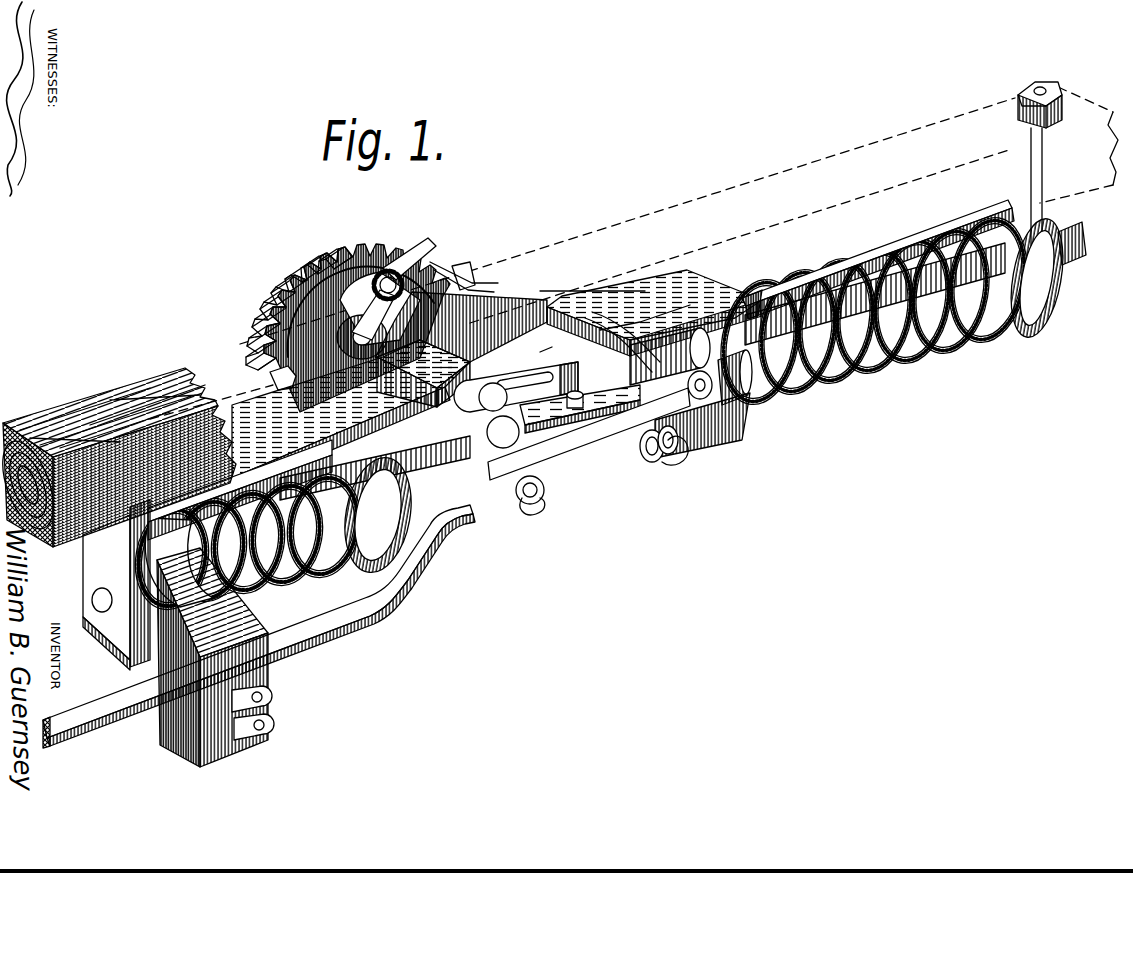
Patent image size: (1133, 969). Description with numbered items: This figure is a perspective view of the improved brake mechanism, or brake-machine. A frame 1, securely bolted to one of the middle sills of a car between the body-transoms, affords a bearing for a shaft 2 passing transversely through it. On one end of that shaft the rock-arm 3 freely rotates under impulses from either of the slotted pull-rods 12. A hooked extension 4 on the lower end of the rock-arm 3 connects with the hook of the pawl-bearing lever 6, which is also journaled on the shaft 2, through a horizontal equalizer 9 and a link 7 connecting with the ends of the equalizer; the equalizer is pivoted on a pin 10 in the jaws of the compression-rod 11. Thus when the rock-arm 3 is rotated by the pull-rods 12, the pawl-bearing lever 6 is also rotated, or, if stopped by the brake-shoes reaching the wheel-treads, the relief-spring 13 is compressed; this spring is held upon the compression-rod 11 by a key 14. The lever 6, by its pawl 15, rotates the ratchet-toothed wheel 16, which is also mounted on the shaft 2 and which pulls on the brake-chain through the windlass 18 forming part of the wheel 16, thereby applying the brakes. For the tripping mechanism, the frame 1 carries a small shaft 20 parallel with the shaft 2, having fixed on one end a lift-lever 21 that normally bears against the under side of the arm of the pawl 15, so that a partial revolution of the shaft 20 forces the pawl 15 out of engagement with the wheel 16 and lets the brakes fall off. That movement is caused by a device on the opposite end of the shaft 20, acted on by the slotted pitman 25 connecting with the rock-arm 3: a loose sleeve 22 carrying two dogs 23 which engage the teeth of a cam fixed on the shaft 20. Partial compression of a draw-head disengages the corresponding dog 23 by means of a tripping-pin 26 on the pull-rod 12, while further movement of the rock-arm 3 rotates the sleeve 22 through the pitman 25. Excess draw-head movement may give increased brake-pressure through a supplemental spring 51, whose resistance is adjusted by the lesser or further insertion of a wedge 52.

The frame 1 is at (752, 436).
The shaft 2 is at (516, 405).
The rock-arm 3 is at (423, 395).
The hooked extension 4 is at (532, 514).
The pawl-bearing lever 6 is at (546, 345).
The link 7 is at (603, 472).
The horizontal equalizer 9 is at (682, 454).
The pin 10 is at (580, 409).
The compression-rod 11 is at (1080, 250).
The pull-rod 12 is at (834, 268).
The relief-spring 13 is at (852, 372).
The key 14 is at (1050, 302).
The pawl 15 is at (458, 272).
The ratchet-toothed wheel 16 is at (300, 272).
The windlass 18 is at (270, 382).
The small shaft 20 is at (782, 409).
The lift-lever 21 is at (485, 290).
The loose sleeve 22 is at (647, 345).
The dog 23 is at (651, 313).
The slotted pitman 25 is at (624, 447).
The tripping-pin 26 is at (732, 371).
The supplemental spring 51 is at (303, 586).
The wedge 52 is at (270, 672).